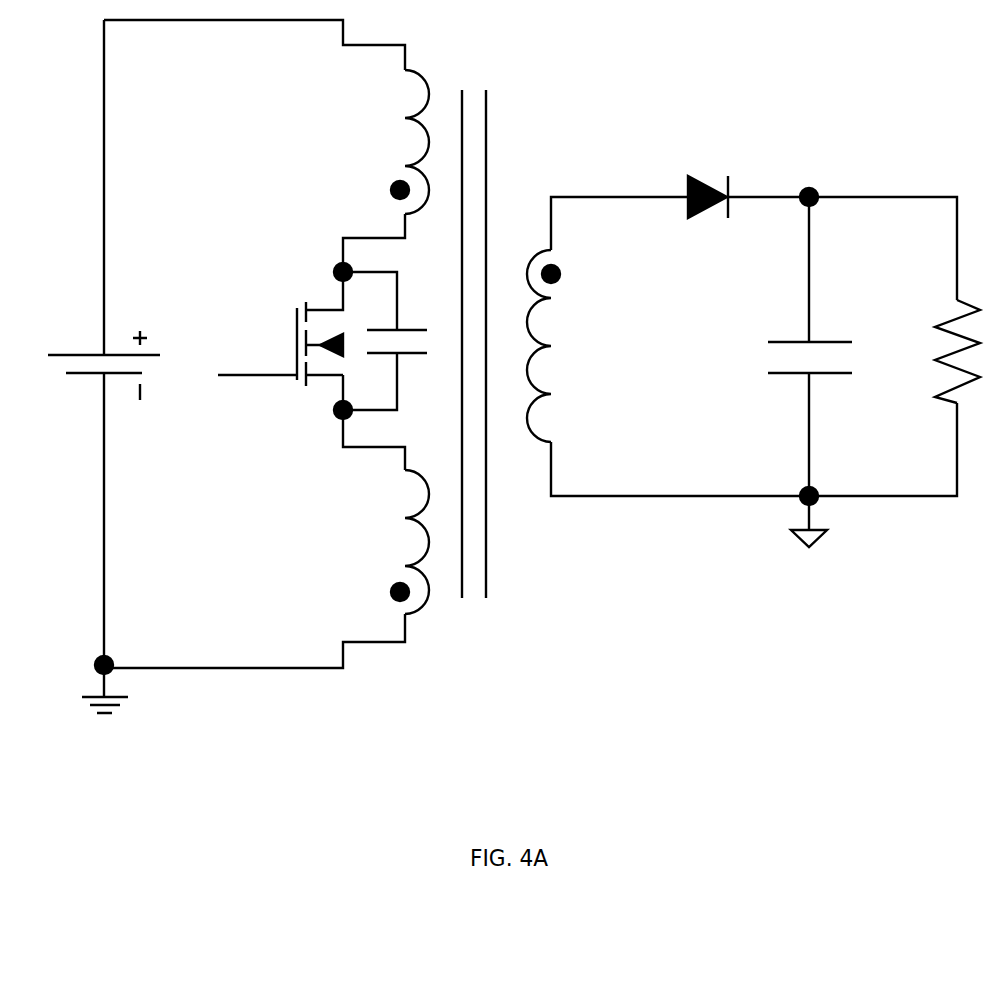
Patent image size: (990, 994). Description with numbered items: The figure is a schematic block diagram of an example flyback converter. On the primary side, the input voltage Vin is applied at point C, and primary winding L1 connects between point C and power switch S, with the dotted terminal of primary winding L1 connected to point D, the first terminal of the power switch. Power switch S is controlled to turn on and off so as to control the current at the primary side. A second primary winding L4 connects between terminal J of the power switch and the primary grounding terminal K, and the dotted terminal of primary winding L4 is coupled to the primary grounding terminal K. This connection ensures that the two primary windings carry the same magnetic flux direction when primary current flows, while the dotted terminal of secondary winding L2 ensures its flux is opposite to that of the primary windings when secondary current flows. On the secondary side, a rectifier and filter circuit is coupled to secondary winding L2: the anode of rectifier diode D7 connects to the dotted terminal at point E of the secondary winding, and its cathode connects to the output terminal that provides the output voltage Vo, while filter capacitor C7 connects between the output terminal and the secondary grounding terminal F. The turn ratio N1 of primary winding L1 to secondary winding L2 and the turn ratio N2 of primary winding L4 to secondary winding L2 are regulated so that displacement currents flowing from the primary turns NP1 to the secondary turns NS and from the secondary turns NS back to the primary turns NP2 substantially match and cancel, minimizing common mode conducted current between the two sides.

The input voltage Vin is at (93, 338).
The primary winding L1 is at (384, 142).
The primary winding L4 is at (379, 542).
The secondary winding L2 is at (569, 346).
The turn ratio of primary winding L1 NP1 is at (257, 164).
The turn ratio of primary winding L4 NP2 is at (257, 549).
The secondary winding turns NS is at (657, 387).
The turn ratio N1 is at (595, 103).
The turn ratio N2 is at (594, 583).
The power switch S is at (322, 341).
The rectifier diode D7 is at (700, 216).
The output capacitor C7 is at (819, 346).
The output voltage Vo is at (941, 157).
The point C is at (346, 65).
The point D is at (347, 210).
The terminal J is at (343, 471).
The primary grounding terminal K is at (349, 617).
The point E is at (590, 271).
The secondary grounding terminal F is at (591, 454).